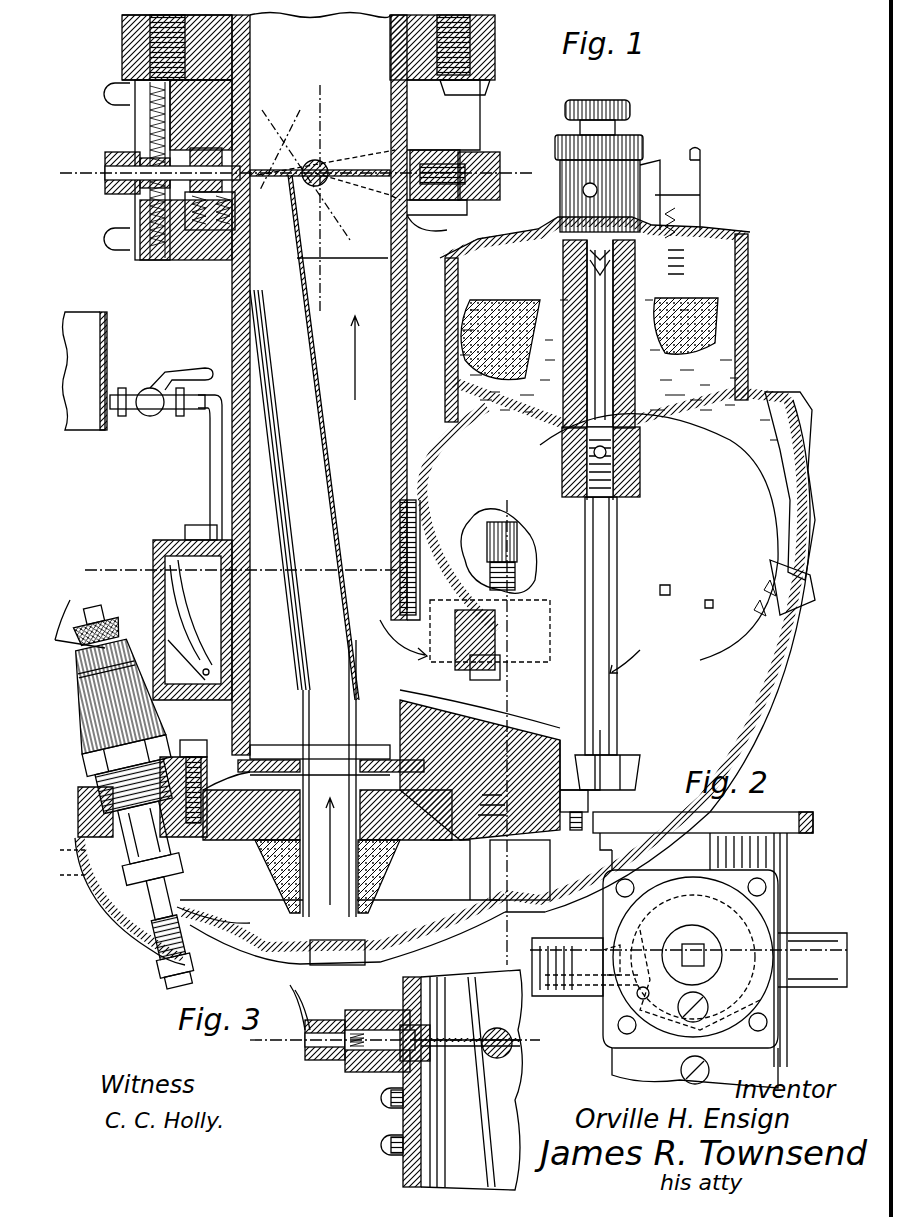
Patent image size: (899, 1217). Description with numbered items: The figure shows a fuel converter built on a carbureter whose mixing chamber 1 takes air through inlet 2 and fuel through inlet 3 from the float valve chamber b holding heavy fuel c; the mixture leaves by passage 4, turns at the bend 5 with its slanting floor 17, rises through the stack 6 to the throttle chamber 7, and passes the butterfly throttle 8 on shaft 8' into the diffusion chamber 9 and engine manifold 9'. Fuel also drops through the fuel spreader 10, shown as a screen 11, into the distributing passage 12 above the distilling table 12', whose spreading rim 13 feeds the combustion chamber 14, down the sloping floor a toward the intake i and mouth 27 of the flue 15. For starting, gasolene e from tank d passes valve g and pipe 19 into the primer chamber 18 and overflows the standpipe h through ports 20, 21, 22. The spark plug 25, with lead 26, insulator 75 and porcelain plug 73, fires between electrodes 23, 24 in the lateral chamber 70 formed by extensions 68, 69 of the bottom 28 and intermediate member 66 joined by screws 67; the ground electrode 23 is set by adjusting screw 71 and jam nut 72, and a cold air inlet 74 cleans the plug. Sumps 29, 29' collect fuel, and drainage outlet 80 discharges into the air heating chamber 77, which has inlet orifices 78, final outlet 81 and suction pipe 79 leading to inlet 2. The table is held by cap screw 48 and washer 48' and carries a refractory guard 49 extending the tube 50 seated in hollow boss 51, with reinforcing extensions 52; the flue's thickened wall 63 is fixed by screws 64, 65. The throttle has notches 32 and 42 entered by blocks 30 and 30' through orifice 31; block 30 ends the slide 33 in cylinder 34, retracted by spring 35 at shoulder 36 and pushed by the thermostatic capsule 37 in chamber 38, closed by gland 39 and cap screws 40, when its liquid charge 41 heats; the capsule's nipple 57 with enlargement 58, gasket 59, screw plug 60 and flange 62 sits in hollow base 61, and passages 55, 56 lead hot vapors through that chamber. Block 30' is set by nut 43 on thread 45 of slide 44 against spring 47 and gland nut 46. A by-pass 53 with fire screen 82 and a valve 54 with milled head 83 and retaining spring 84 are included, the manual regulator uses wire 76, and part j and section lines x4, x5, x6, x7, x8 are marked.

In FIG. 1, the mixing chamber 1 is at (772, 660).
In FIG. 1, the air inlet 2 is at (797, 486).
In FIG. 1, the fuel inlet 3 is at (560, 455).
In FIG. 1, the passage 4 is at (565, 680).
In FIG. 1, the bend 5 is at (440, 706).
In FIG. 1, the stack 6 is at (303, 603).
In FIG. 3, the stack 6 is at (520, 1086).
In FIG. 1, the throttle chamber 7 is at (313, 236).
In FIG. 2, the throttle chamber 7 is at (792, 1026).
In FIG. 1, the throttle 8 is at (320, 163).
In FIG. 2, the throttle 8 is at (692, 955).
In FIG. 3, the throttle 8 is at (487, 1043).
In FIG. 1, the throttle shaft 8' is at (317, 140).
In FIG. 2, the throttle shaft 8' is at (551, 967).
In FIG. 1, the diffusion chamber 9 is at (320, 60).
In FIG. 2, the diffusion chamber 9 is at (758, 950).
In FIG. 1, the engine manifold 9' is at (275, 30).
In FIG. 1, the nozzle flange 10 is at (276, 745).
In FIG. 1, the screen 11 is at (305, 760).
In FIG. 1, the distributing passage 12 is at (337, 780).
In FIG. 1, the distilling table 12' is at (331, 740).
In FIG. 1, the spreading rim 13 is at (440, 770).
In FIG. 1, the combustion chamber 14 is at (520, 868).
In FIG. 1, the flue 15 is at (336, 757).
In FIG. 3, the flue 15 is at (462, 1082).
In FIG. 1, the slanting floor 17 is at (480, 765).
In FIG. 1, the primer chamber 18 is at (170, 540).
In FIG. 1, the pipe 19 is at (210, 476).
In FIG. 1, the port 20 is at (152, 565).
In FIG. 1, the port 21 is at (204, 605).
In FIG. 1, the port 22 is at (256, 725).
In FIG. 1, the ground electrode 23 is at (125, 882).
In FIG. 1, the electrode 24 is at (110, 852).
In FIG. 1, the spark plug 25 is at (163, 725).
In FIG. 1, the lead 26 is at (79, 595).
In FIG. 1, the flue inlet 27 is at (330, 950).
In FIG. 1, the combustion chamber bottom 28 is at (341, 935).
In FIG. 1, the sump 29 is at (414, 960).
In FIG. 1, the sump 29' is at (349, 974).
In FIG. 1, the plug 30 is at (277, 150).
In FIG. 3, the plug 30 is at (427, 1031).
In FIG. 1, the block 30' is at (349, 202).
In FIG. 1, the orifice 31 is at (280, 150).
In FIG. 2, the orifice 31 is at (697, 948).
In FIG. 3, the orifice 31 is at (416, 1020).
In FIG. 1, the notch 32 is at (267, 185).
In FIG. 2, the notch 32 is at (682, 990).
In FIG. 3, the notch 32 is at (426, 1040).
In FIG. 1, the cylindrical slide 33 is at (172, 170).
In FIG. 3, the cylindrical slide 33 is at (370, 1030).
In FIG. 1, the cylinder 34 is at (205, 242).
In FIG. 3, the cylinder 34 is at (356, 1072).
In FIG. 1, the spring 35 is at (215, 247).
In FIG. 3, the spring 35 is at (390, 1025).
In FIG. 1, the shoulder 36 is at (190, 252).
In FIG. 3, the shoulder 36 is at (386, 1073).
In FIG. 1, the capsule 37 is at (165, 240).
In FIG. 1, the thermostat chamber 38 is at (160, 260).
In FIG. 2, the thermostat chamber 38 is at (770, 908).
In FIG. 1, the gland 39 is at (140, 214).
In FIG. 1, the cap screws 40 is at (113, 94).
In FIG. 1, the charge 41 is at (140, 128).
In FIG. 1, the notch 42 is at (392, 170).
In FIG. 1, the nut 43 is at (478, 155).
In FIG. 1, the cylindrical slide 44 is at (445, 165).
In FIG. 1, the thread 45 is at (480, 200).
In FIG. 1, the gland nut 46 is at (439, 215).
In FIG. 1, the spring 47 is at (430, 150).
In FIG. 1, the cap screw 48 is at (195, 770).
In FIG. 1, the washer 48' is at (183, 846).
In FIG. 1, the refractory guard 49 is at (218, 952).
In FIG. 1, the tube 50 is at (337, 495).
In FIG. 1, the hollow boss 51 is at (270, 862).
In FIG. 1, the reinforcing extensions 52 is at (396, 870).
In FIG. 1, the by-pass 53 is at (480, 680).
In FIG. 1, the valve 54 is at (465, 631).
In FIG. 1, the passage 55 is at (175, 242).
In FIG. 2, the passage 55 is at (622, 985).
In FIG. 1, the passage 56 is at (302, 110).
In FIG. 1, the nipple 57 is at (132, 195).
In FIG. 1, the enlargement 58 is at (122, 188).
In FIG. 1, the gasket 59 is at (140, 180).
In FIG. 1, the screw plug 60 is at (105, 162).
In FIG. 1, the hollow base 61 is at (140, 160).
In FIG. 1, the flange 62 is at (140, 205).
In FIG. 1, the reinforcing wall 63 is at (257, 256).
In FIG. 1, the screw 64 is at (236, 210).
In FIG. 2, the screw 64 is at (708, 1007).
In FIG. 1, the screw 65 is at (260, 288).
In FIG. 2, the screw 65 is at (682, 1074).
In FIG. 1, the intermediate member 66 is at (578, 765).
In FIG. 1, the screws 67 is at (588, 805).
In FIG. 1, the lateral extension 68 is at (130, 902).
In FIG. 1, the lateral extension 69 is at (86, 810).
In FIG. 1, the lateral chamber 70 is at (145, 922).
In FIG. 1, the adjusting screw 71 is at (160, 975).
In FIG. 1, the jam nut 72 is at (215, 946).
In FIG. 1, the porcelain plug 73 is at (88, 752).
In FIG. 1, the cold air inlet 74 is at (95, 792).
In FIG. 1, the spark plug insulator 75 is at (134, 815).
In FIG. 3, the wire 76 is at (305, 1052).
In FIG. 1, the air heating chamber 77 is at (207, 962).
In FIG. 1, the air inlet orifices 78 is at (67, 873).
In FIG. 1, the suction pipe 79 is at (725, 732).
In FIG. 1, the drainage outlet 80 is at (380, 900).
In FIG. 1, the final drainage outlet 81 is at (376, 952).
In FIG. 1, the fire screen 82 is at (498, 818).
In FIG. 1, the milled head 83 is at (518, 546).
In FIG. 1, the retaining spring 84 is at (487, 542).
In FIG. 1, the sloping floor a is at (442, 900).
In FIG. 1, the float valve chamber b is at (448, 280).
In FIG. 1, the heavy liquid fuel c is at (478, 300).
In FIG. 1, the gasolene tank d is at (90, 315).
In FIG. 1, the gasolene e is at (96, 338).
In FIG. 1, the valve g is at (145, 390).
In FIG. 1, the standpipe h is at (200, 587).
In FIG. 1, the flue intake i is at (343, 894).
In FIG. 1, the casing j is at (507, 54).
In FIG. 2, the casing j is at (818, 812).
In FIG. 1, the section line x4 is at (61, 170).
In FIG. 1, the section line x5 is at (524, 178).
In FIG. 3, the section line x5 is at (401, 1036).
In FIG. 1, the section line x6 is at (463, 529).
In FIG. 1, the section line x7 is at (495, 729).
In FIG. 1, the section line x8 is at (324, 198).